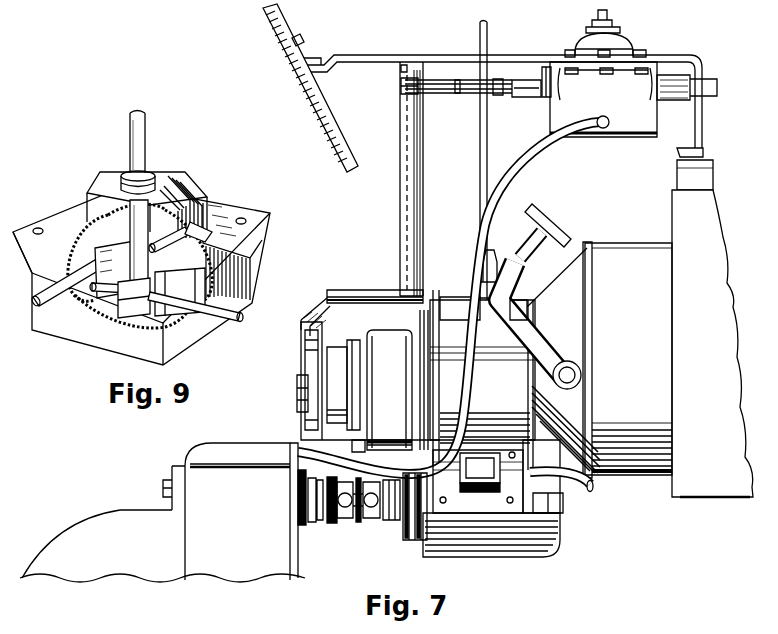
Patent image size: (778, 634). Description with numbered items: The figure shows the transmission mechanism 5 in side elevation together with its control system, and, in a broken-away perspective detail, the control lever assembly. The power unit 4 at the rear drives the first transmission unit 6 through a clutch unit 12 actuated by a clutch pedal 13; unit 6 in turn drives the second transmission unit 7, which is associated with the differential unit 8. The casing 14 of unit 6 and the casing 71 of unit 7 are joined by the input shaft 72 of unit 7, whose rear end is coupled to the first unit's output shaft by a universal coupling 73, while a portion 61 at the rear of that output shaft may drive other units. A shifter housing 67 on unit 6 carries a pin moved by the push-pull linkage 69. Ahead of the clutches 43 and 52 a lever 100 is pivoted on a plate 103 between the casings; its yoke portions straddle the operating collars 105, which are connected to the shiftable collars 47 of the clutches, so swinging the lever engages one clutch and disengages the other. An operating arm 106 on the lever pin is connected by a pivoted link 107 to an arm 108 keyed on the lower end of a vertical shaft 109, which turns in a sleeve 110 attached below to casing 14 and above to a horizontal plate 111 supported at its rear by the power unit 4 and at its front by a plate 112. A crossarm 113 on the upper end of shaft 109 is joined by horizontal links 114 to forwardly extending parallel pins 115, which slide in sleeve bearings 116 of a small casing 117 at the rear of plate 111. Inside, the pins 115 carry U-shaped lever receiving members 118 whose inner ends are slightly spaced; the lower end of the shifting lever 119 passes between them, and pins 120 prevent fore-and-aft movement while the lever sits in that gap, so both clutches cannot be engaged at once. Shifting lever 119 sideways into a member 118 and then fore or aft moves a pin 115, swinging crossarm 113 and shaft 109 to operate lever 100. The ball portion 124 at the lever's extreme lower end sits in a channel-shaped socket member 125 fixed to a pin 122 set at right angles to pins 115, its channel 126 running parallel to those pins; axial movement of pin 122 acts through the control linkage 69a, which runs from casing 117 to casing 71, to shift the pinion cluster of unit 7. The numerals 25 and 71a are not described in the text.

In FIG. 7, the power unit 4 is at (706, 226).
In FIG. 7, the transmission mechanism 5 is at (533, 317).
In FIG. 7, the first transmission unit 6 is at (489, 563).
In FIG. 7, the second transmission unit 7 is at (232, 438).
In FIG. 7, the differential unit 8 is at (123, 501).
In FIG. 7, the clutch unit 12 is at (553, 292).
In FIG. 7, the clutch pedal 13 is at (545, 213).
In FIG. 7, the casing 14 is at (520, 422).
In FIG. 7, the rod 25 is at (481, 165).
In FIG. 7, the clutch unit 43 is at (365, 340).
In FIG. 7, the shiftable collar 47 is at (336, 360).
In FIG. 7, the clutch 52 is at (400, 332).
In FIG. 7, the portion of output shaft 61 is at (390, 521).
In FIG. 7, the shifter housing 67 is at (490, 477).
In FIG. 7, the push-pull linkage 69 is at (582, 490).
In FIG. 7, the control linkage 69a is at (513, 178).
In FIG. 7, the casing 71 is at (181, 455).
In FIG. 7, the table surface 71a is at (60, 526).
In FIG. 7, the input shaft 72 is at (320, 522).
In FIG. 7, the universal coupling 73 is at (350, 520).
In FIG. 7, the lever 100 is at (303, 354).
In FIG. 7, the plate 103 is at (368, 442).
In FIG. 7, the operating collars 105 is at (300, 393).
In FIG. 7, the operating arm 106 is at (314, 308).
In FIG. 7, the pivoted link 107 is at (392, 290).
In FIG. 7, the arm 108 is at (432, 300).
In FIG. 7, the shaft 109 is at (410, 177).
In FIG. 7, the sleeve 110 is at (402, 222).
In FIG. 7, the plate 111 is at (352, 55).
In FIG. 7, the plate 112 is at (340, 150).
In FIG. 7, the crossarm 113 is at (401, 88).
In FIG. 7, the links 114 is at (465, 93).
In FIG. 9, the pins 115 is at (55, 288).
In FIG. 7, the pins 115 is at (518, 97).
In FIG. 7, the sleeve bearings 116 is at (546, 66).
In FIG. 9, the casing 117 is at (44, 306).
In FIG. 7, the casing 117 is at (640, 114).
In FIG. 9, the lever receiving members 118 is at (106, 219).
In FIG. 9, the shifting lever 119 is at (133, 134).
In FIG. 7, the shifting lever 119 is at (607, 15).
In FIG. 9, the pins 120 is at (193, 206).
In FIG. 9, the pin 122 is at (100, 298).
In FIG. 9, the ball portion 124 is at (137, 316).
In FIG. 9, the socket member 125 is at (168, 316).
In FIG. 9, the channel 126 is at (116, 298).